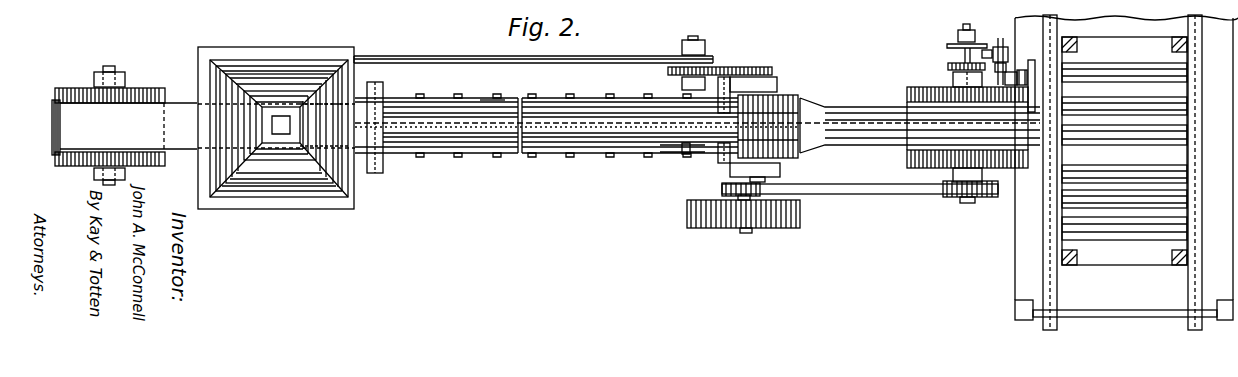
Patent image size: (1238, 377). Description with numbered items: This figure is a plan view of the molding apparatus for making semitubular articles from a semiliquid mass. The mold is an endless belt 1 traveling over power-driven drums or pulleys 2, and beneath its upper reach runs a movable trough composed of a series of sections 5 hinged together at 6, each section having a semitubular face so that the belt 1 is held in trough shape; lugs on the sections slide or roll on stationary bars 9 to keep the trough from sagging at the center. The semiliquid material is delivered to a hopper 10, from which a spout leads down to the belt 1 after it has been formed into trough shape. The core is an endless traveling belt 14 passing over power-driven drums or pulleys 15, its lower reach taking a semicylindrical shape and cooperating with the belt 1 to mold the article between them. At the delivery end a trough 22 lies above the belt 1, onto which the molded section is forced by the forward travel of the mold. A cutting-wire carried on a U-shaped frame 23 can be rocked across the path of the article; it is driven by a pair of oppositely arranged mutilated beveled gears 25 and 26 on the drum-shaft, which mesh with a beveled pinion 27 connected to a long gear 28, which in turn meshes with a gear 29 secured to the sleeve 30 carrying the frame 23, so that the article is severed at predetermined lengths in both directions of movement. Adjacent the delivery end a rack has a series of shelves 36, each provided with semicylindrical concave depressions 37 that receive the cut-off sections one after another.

The endless belt 1 is at (488, 155).
The power-driven drums or pulleys 2 is at (153, 162).
The trough-sections 5 is at (452, 156).
The hinges 6 is at (500, 97).
The stationary bars 9 is at (488, 100).
The hopper 10 is at (278, 75).
The endless traveling belt 14 is at (641, 128).
The power-driven drums or pulleys 15 is at (788, 158).
The trough 22 is at (892, 132).
The U-shaped frame 23 is at (1032, 80).
The beveled gear 25 is at (950, 46).
The beveled gear 26 is at (948, 66).
The beveled pinion 27 is at (987, 50).
The long gear 28 is at (1001, 38).
The gear 29 is at (1005, 78).
The sleeve 30 is at (1021, 70).
The shelves 36 is at (1122, 252).
The semicylindrical concave depressions 37 is at (1124, 151).